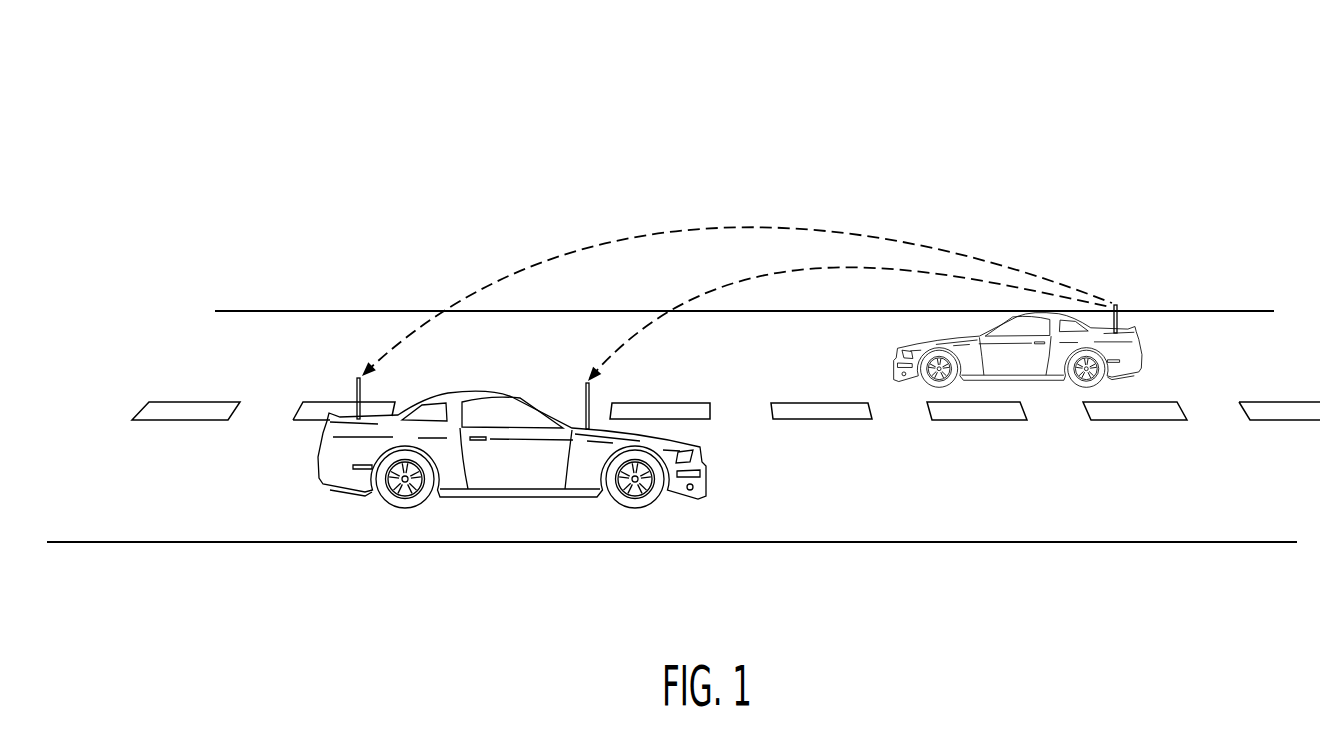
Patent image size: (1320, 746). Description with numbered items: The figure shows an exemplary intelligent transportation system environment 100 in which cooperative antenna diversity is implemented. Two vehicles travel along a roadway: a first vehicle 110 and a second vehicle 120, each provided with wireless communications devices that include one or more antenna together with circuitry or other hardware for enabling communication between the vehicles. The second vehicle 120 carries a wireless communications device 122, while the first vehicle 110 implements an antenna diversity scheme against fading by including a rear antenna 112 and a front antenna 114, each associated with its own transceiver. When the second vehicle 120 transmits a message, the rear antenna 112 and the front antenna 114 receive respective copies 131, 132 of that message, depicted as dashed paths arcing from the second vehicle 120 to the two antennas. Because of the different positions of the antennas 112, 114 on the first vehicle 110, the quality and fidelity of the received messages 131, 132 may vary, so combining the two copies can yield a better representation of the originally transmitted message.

The intelligent transportation system (ITS) environment 100 is at (282, 103).
The first vehicle 110 is at (705, 480).
The rear antenna 112 is at (355, 383).
The front antenna 114 is at (591, 398).
The second vehicle 120 is at (1145, 363).
The wireless communications device 122 is at (1118, 305).
The received message copy 131 is at (563, 253).
The received message copy 132 is at (617, 353).